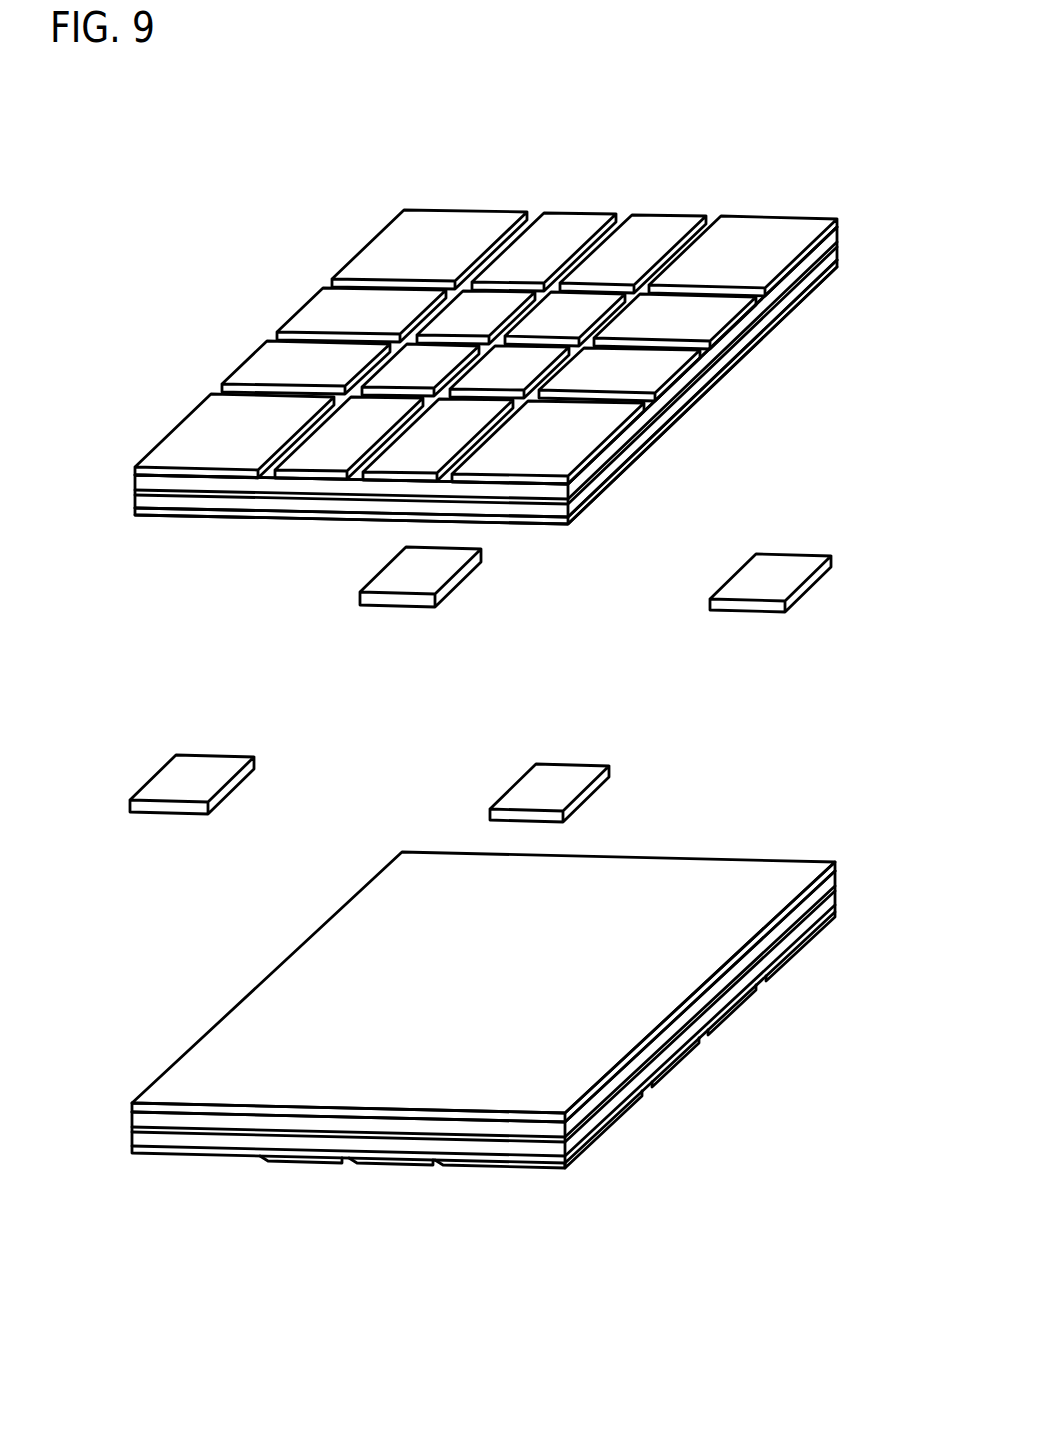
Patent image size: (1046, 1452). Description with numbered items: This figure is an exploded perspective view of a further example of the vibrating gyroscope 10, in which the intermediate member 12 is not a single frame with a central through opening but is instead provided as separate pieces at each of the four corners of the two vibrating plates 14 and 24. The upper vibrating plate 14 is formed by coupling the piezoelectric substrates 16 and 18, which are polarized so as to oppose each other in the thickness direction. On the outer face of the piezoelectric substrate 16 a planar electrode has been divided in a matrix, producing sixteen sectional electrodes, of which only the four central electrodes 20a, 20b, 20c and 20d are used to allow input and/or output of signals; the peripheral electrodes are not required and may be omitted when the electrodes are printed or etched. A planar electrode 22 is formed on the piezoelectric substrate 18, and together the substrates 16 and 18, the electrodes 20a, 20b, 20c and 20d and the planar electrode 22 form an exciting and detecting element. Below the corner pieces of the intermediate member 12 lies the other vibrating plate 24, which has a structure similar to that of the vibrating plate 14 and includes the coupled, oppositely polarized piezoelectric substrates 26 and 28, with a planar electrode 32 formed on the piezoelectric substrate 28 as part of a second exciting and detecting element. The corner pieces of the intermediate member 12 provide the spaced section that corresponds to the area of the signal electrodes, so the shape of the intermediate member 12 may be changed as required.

The vibrating gyroscope 10 is at (239, 124).
The intermediate member 12 is at (394, 572).
The vibrating plate 14 is at (138, 528).
The piezoelectric substrate 16 is at (212, 483).
The piezoelectric substrate 18 is at (223, 502).
The electrode 20a is at (492, 313).
The electrode 20b is at (570, 317).
The electrode 20c is at (402, 372).
The electrode 20d is at (515, 370).
The planar electrode 22 is at (267, 515).
The vibrating plate 24 is at (128, 1178).
The piezoelectric substrate 26 is at (232, 1140).
The piezoelectric substrate 28 is at (205, 1120).
The planar electrode 32 is at (308, 955).